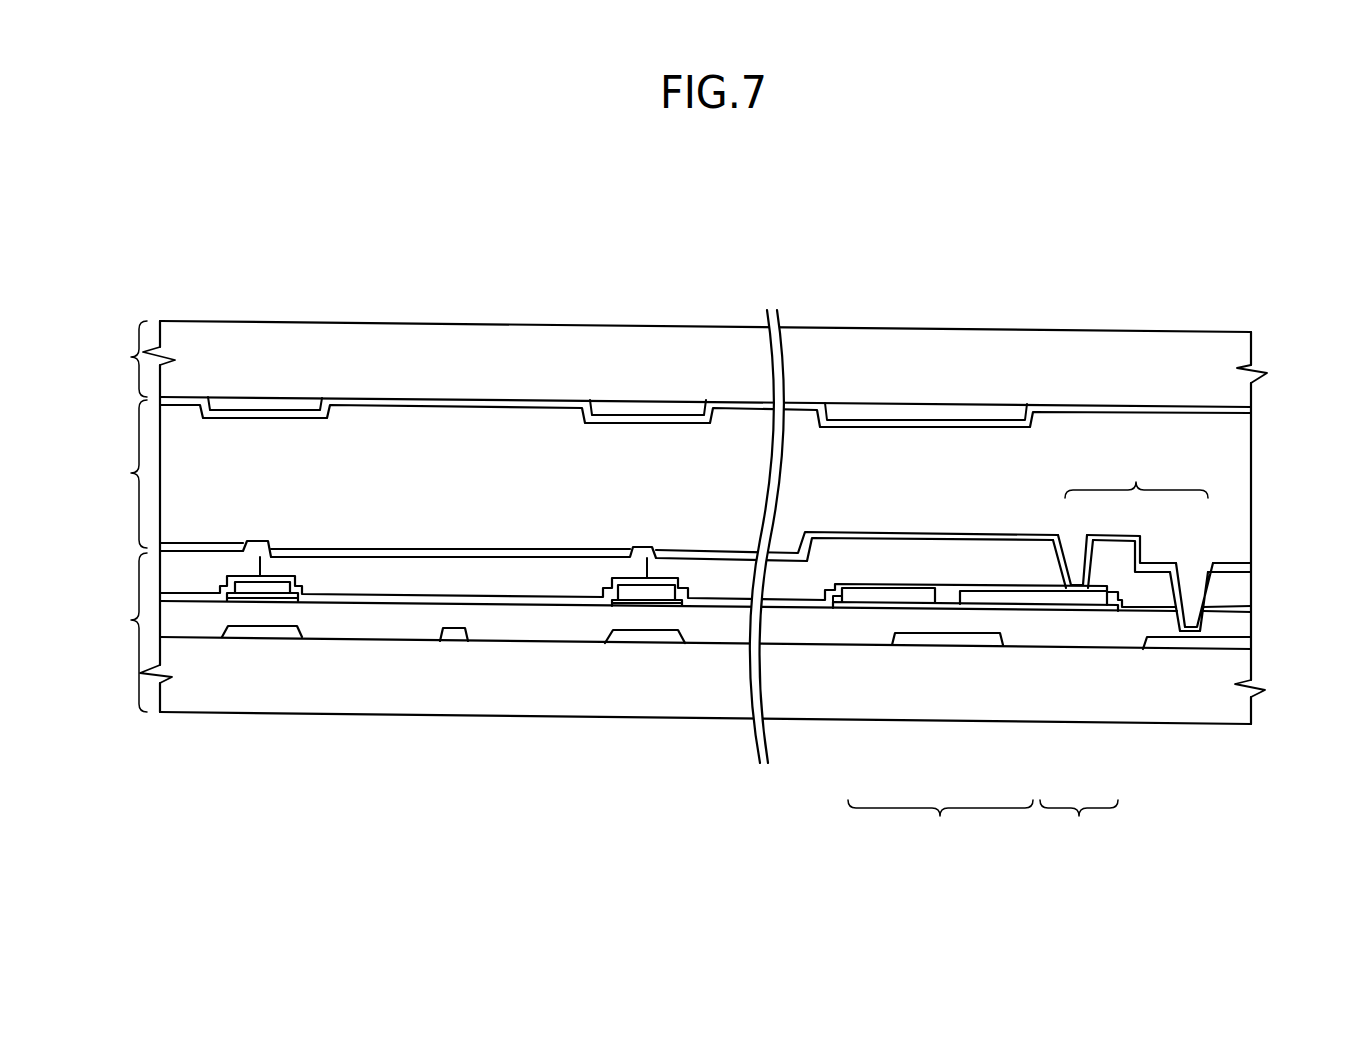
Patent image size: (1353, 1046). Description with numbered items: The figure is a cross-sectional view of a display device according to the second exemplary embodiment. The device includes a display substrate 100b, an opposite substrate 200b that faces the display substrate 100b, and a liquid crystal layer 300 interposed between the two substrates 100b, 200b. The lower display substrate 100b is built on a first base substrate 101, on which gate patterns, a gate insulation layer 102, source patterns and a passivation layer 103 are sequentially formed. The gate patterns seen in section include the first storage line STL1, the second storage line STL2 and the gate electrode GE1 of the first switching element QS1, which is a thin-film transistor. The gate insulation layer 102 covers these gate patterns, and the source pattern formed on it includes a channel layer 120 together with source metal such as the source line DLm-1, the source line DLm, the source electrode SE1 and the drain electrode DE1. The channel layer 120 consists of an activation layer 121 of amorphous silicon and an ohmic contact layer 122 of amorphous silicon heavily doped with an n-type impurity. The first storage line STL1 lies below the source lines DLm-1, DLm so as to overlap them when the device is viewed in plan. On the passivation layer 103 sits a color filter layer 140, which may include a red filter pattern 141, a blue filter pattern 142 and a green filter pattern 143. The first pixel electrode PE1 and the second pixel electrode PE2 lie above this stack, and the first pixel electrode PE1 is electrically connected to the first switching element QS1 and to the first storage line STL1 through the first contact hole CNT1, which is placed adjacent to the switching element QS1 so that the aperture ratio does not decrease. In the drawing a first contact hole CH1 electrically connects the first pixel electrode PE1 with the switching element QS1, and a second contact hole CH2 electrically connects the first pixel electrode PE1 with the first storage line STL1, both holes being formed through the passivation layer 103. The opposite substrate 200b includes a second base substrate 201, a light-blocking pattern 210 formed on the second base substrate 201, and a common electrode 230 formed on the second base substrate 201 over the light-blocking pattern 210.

The opposite substrate 200b is at (131, 357).
The liquid crystal layer 300 is at (131, 473).
The display substrate 100b is at (131, 620).
The light-blocking pattern 210 is at (925, 410).
The second base substrate 201 is at (1240, 383).
The common electrode 230 is at (1240, 411).
The color filter layer 140 is at (1240, 582).
The passivation layer 103 is at (1240, 609).
The gate insulation layer 102 is at (1240, 628).
The first base substrate 101 is at (1240, 703).
The blue filter pattern 142 is at (183, 573).
The red filter pattern 141 is at (397, 577).
The green filter pattern 143 is at (740, 580).
The activation layer 121 is at (1058, 613).
The ohmic contact layer 122 is at (1103, 605).
The channel layer 120 is at (1079, 821).
The first pixel electrode PE1 is at (455, 553).
The second pixel electrode PE2 is at (207, 548).
The first storage line STL1 is at (455, 633).
The second storage line STL2 is at (248, 635).
The (m)th source line DLm is at (647, 592).
The (m-1)th source line DLm-1 is at (262, 588).
The source electrode SE1 is at (868, 598).
The gate electrode GE1 is at (943, 640).
The drain electrode DE1 is at (1012, 598).
The first switching element QS1 is at (940, 821).
The first contact hole CNT1 is at (1136, 479).
The first contact hole CH1 is at (1086, 557).
The second contact hole CH2 is at (1198, 580).